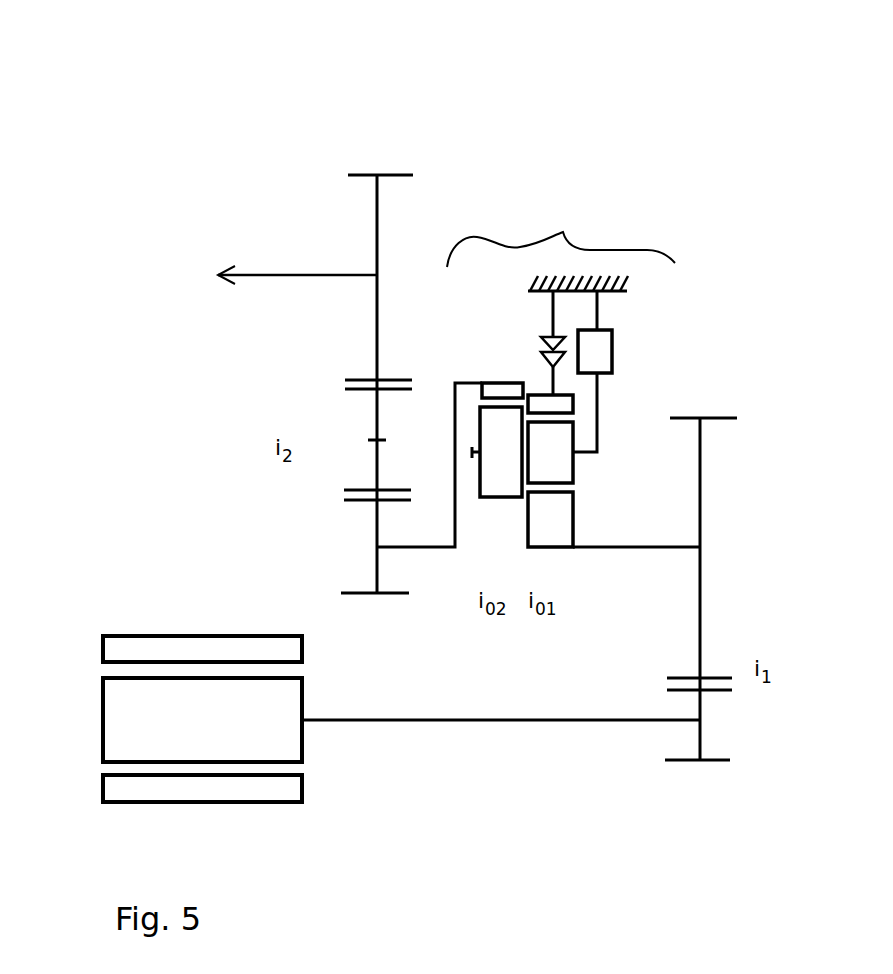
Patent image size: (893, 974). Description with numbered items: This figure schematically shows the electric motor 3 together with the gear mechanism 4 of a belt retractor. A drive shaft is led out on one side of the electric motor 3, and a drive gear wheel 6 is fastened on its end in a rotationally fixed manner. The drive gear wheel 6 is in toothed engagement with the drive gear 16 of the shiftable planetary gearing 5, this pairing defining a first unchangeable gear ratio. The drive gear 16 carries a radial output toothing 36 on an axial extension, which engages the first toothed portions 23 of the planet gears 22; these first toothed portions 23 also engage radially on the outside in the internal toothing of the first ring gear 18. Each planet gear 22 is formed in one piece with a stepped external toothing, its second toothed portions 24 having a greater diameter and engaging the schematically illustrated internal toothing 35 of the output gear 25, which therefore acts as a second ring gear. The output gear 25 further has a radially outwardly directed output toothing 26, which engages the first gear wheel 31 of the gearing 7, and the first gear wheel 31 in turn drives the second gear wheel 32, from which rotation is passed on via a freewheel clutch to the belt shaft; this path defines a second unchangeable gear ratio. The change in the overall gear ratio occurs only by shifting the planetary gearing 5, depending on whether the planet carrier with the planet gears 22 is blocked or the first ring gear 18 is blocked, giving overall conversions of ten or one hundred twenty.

The electric motor 3 is at (145, 720).
The gear mechanism 4 is at (455, 167).
The shiftable planetary gearing 5 is at (561, 291).
The drive gear wheel 6 is at (700, 747).
The gearing 7 is at (308, 363).
The drive gear 16 is at (700, 592).
The first ring gear 18 is at (567, 407).
The planet gears 22 is at (579, 468).
The first toothed portions 23 is at (555, 440).
The second toothed portions 24 is at (502, 487).
The output gear 25 is at (455, 448).
The output toothing 26 is at (377, 527).
The first gear wheel 31 is at (377, 402).
The second gear wheel 32 is at (377, 238).
The internal toothing 35 is at (497, 390).
The output toothing 36 is at (565, 520).